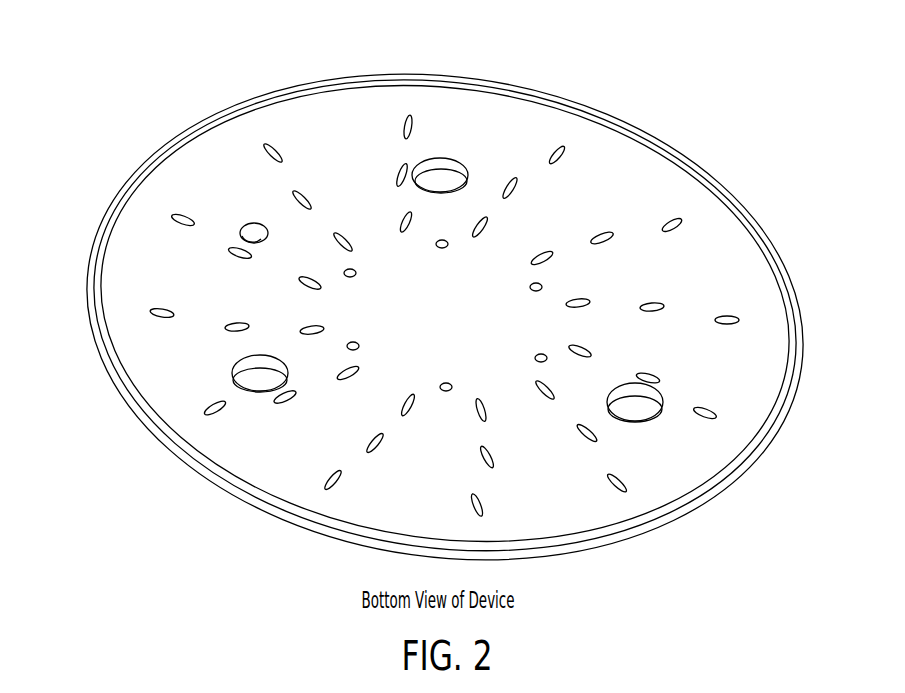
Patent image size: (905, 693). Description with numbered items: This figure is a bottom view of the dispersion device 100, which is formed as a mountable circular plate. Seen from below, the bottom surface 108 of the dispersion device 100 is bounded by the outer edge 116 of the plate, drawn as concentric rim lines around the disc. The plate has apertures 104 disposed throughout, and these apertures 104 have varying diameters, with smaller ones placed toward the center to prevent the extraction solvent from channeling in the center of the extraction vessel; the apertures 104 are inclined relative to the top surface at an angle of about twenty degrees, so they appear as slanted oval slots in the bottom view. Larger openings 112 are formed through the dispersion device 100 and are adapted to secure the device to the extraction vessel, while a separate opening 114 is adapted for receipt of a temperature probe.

The dispersion device 100 is at (768, 181).
The apertures 104 is at (442, 240).
The bottom surface 108 is at (155, 343).
The openings 112 is at (637, 410).
The opening 114 is at (240, 233).
The outer edge 116 is at (179, 447).